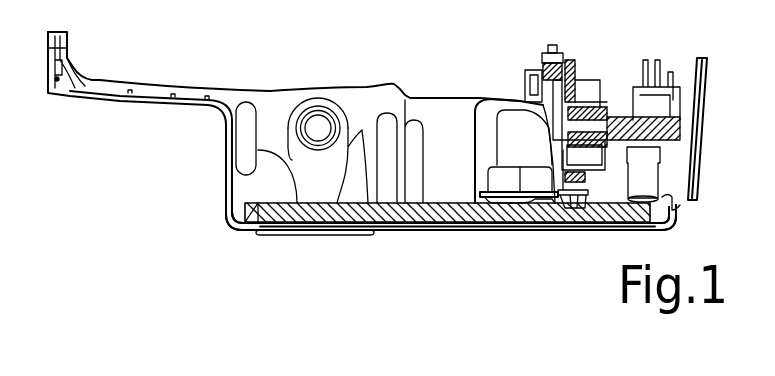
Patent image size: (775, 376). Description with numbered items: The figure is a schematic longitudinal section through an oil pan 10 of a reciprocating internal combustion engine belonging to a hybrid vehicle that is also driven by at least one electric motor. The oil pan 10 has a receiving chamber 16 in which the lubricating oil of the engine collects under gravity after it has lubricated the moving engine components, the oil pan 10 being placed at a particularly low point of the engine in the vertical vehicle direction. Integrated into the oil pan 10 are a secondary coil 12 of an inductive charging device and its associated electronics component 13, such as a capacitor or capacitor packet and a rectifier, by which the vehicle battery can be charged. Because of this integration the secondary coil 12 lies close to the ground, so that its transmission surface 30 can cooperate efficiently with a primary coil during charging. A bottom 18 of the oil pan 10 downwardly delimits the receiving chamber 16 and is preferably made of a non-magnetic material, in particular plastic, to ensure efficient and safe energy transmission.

The oil pan 10 is at (222, 115).
The secondary coil 12 is at (485, 218).
The electronics component 13 is at (252, 225).
The receiving chamber 16 is at (462, 160).
The bottom 18 is at (300, 232).
The transmission surface 30 is at (556, 242).